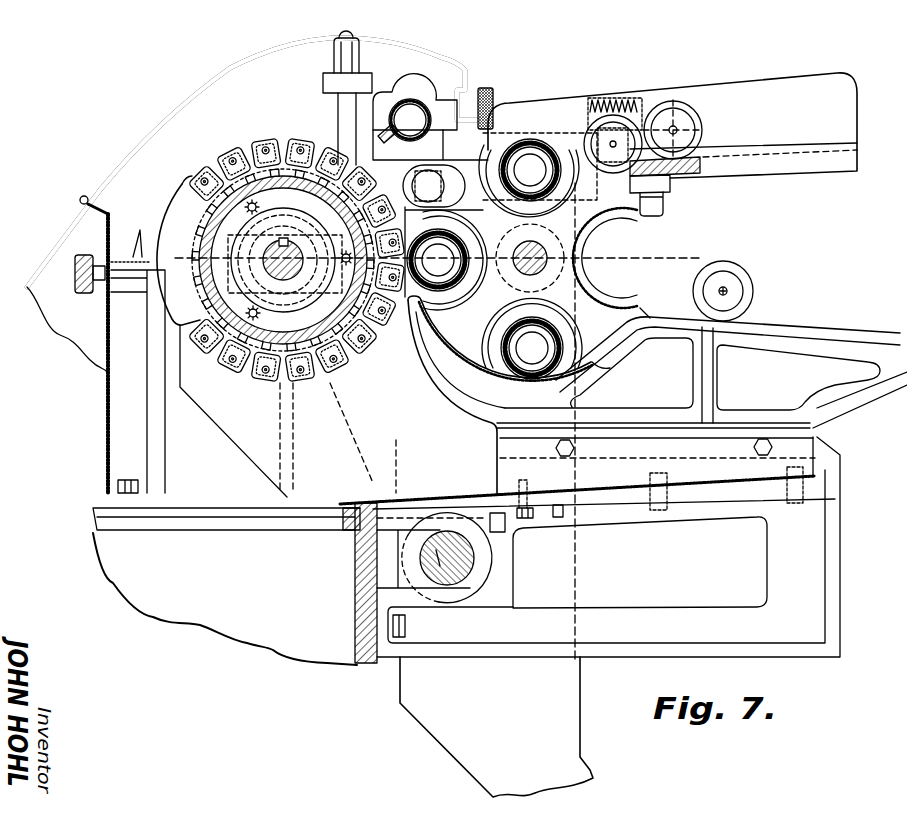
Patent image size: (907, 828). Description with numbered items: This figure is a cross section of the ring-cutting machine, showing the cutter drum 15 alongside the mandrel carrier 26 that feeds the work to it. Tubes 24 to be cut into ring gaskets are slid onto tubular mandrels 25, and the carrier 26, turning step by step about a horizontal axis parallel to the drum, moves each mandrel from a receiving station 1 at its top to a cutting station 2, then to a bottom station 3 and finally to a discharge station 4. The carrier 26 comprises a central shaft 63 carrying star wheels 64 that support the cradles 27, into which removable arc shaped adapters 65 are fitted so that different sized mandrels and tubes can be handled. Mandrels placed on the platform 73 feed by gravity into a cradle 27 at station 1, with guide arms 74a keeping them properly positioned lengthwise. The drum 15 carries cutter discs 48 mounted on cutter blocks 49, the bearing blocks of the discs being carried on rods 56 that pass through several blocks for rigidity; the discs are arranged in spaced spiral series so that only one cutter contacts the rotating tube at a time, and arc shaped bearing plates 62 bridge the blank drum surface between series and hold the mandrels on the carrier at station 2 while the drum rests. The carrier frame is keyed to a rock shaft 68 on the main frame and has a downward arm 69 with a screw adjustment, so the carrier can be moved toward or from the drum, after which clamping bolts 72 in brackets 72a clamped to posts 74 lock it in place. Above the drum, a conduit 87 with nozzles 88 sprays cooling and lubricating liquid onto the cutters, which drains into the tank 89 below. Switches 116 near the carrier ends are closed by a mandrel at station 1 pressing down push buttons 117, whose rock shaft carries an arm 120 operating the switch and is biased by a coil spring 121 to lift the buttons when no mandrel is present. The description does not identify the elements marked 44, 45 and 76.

The receiving station 1 is at (529, 162).
The cutting station 2 is at (445, 257).
The bottom station 3 is at (532, 353).
The discharge station 4 is at (652, 270).
The cutter drum 15 is at (270, 248).
The tube 24 is at (672, 100).
The mandrel 25 is at (755, 272).
The mandrel carrier 26 is at (608, 243).
The cradle 27 is at (598, 282).
The cutter head shaft 44 is at (270, 250).
The cutter head plate 45 is at (283, 260).
The cutter disc 48 is at (255, 146).
The cutter block 49 is at (322, 145).
The rod 56 is at (206, 181).
The arc shaped bearing plate 62 is at (176, 212).
The central shaft 63 is at (526, 266).
The star wheel 64 is at (633, 318).
The arc shaped adapter 65 is at (585, 250).
The rock shaft 68 is at (463, 575).
The arm 69 is at (455, 727).
The clamping bolt 72 is at (440, 182).
The bracket 72a is at (406, 171).
The platform 73 is at (694, 160).
The post 74 is at (340, 104).
The guide arm 74a is at (842, 94).
The rail 76 is at (830, 326).
The conduit 87 is at (422, 102).
The nozzle 88 is at (380, 130).
The tank 89 is at (264, 594).
The switch 116 is at (675, 179).
The push button 117 is at (540, 182).
The arm 120 is at (600, 144).
The coil spring 121 is at (616, 97).